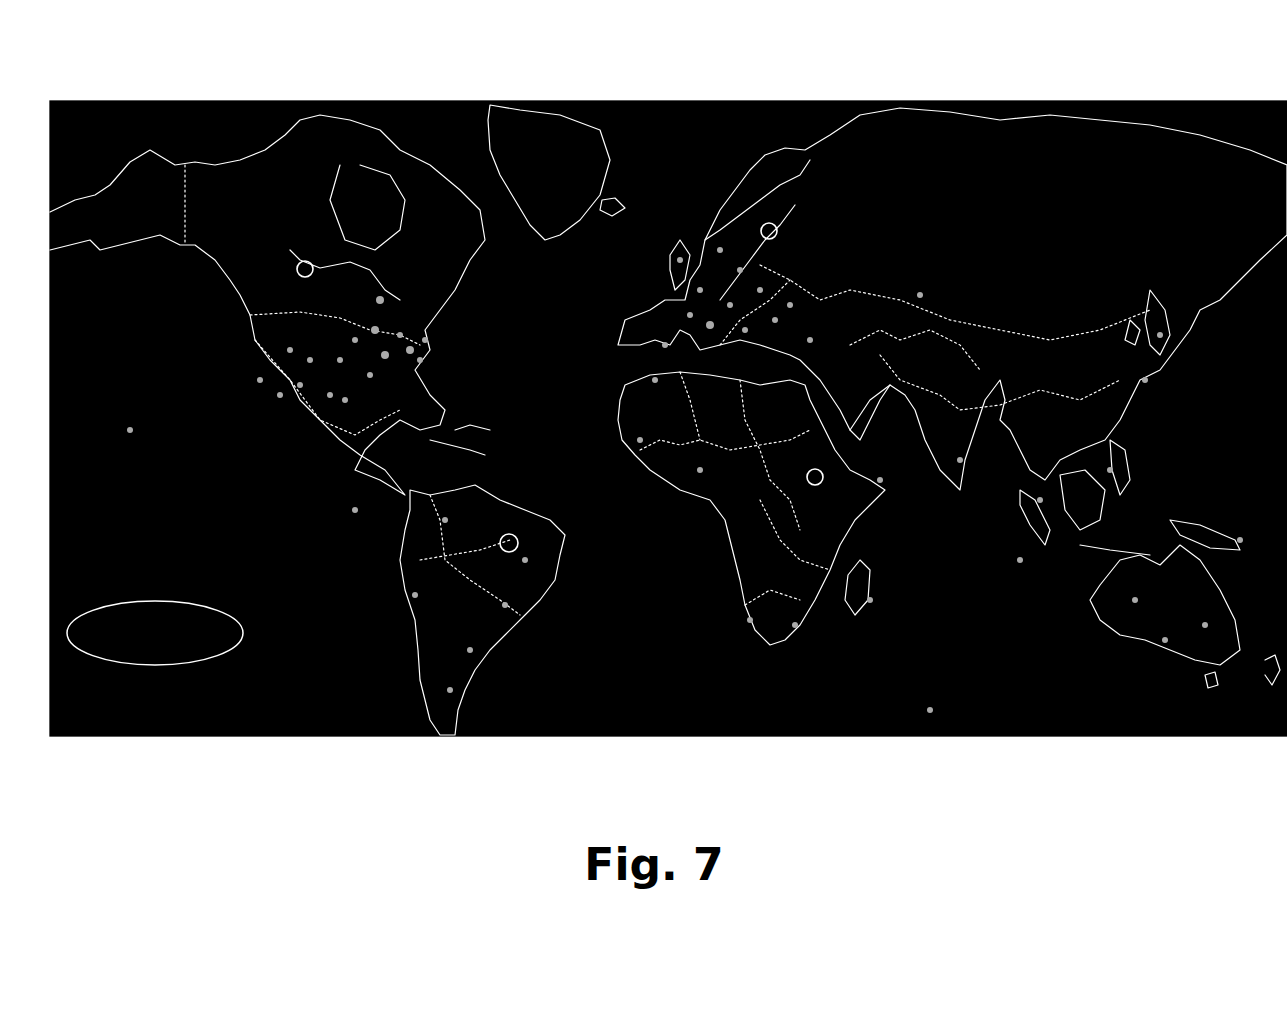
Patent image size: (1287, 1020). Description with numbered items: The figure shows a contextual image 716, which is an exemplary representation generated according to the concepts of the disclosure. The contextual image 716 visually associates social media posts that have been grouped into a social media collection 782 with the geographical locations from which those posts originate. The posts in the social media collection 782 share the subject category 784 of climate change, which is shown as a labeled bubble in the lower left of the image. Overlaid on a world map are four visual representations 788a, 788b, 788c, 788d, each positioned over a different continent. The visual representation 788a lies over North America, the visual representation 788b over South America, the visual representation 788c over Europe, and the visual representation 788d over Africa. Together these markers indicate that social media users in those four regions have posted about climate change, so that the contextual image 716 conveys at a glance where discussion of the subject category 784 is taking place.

The contextual image 716 is at (1224, 69).
The social media collection 782 is at (141, 585).
The subject category 784 is at (243, 630).
The visual representation 788a is at (305, 261).
The visual representation 788b is at (512, 534).
The visual representation 788c is at (777, 231).
The visual representation 788d is at (823, 477).